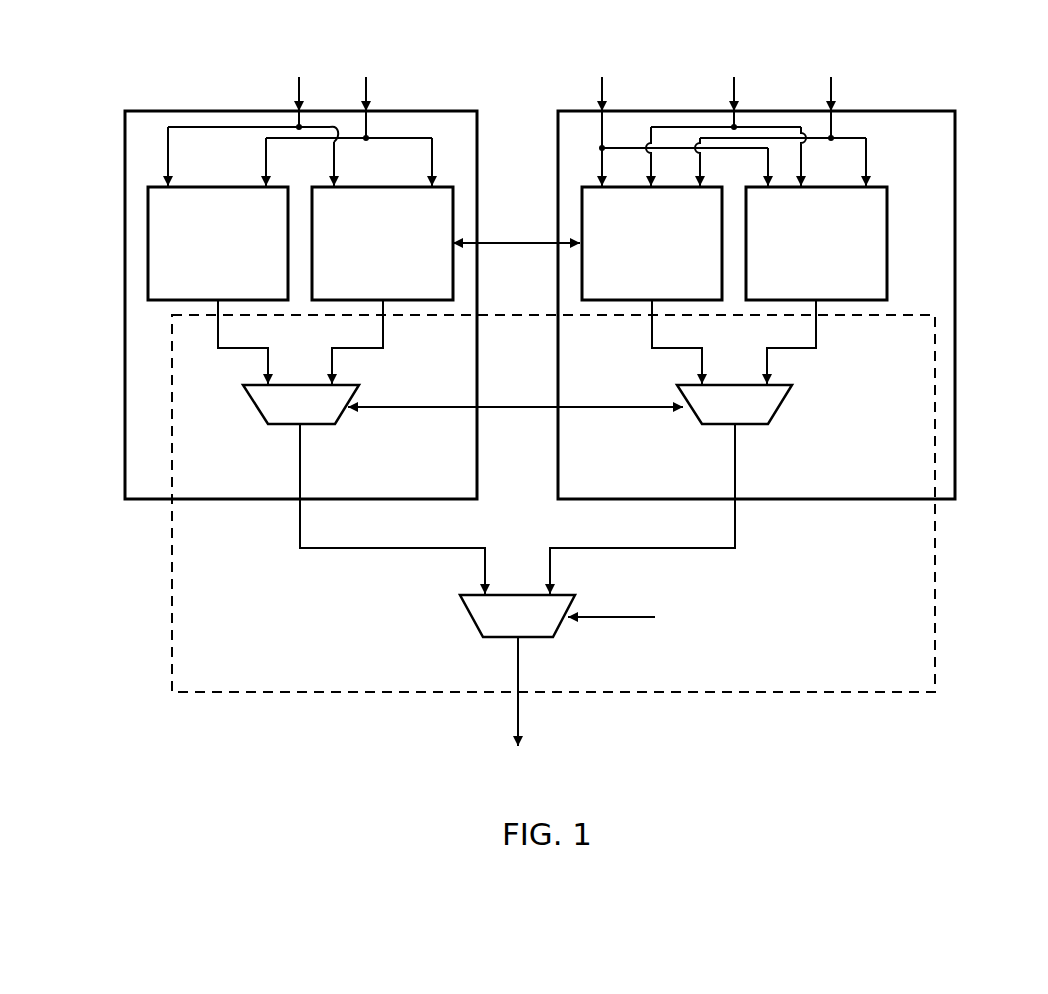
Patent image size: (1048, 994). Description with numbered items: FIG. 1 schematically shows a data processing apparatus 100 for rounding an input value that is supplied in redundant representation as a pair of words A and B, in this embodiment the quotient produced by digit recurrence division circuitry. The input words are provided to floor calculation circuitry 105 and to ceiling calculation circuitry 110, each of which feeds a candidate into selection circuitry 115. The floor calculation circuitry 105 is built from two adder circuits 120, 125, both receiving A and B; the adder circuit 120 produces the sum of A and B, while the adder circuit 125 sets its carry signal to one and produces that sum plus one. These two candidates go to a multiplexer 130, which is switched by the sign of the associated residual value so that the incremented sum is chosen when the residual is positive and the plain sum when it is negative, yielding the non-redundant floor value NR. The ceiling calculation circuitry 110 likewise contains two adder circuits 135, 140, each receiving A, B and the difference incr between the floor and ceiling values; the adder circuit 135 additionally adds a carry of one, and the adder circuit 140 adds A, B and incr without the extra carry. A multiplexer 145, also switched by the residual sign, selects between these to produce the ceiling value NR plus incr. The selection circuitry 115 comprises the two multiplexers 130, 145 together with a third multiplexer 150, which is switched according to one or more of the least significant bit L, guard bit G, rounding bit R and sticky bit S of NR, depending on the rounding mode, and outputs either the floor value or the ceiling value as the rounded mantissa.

The data processing apparatus 100 is at (535, 443).
The floor calculation circuitry 105 is at (291, 352).
The ceiling calculation circuitry 110 is at (760, 352).
The selection circuitry 115 is at (589, 531).
The adder circuit 120 is at (148, 221).
The adder circuit 125 is at (453, 256).
The multiplexer 130 is at (262, 415).
The adder circuit 135 is at (580, 268).
The adder circuit 140 is at (887, 224).
The multiplexer 145 is at (790, 396).
The third multiplexer 150 is at (507, 592).